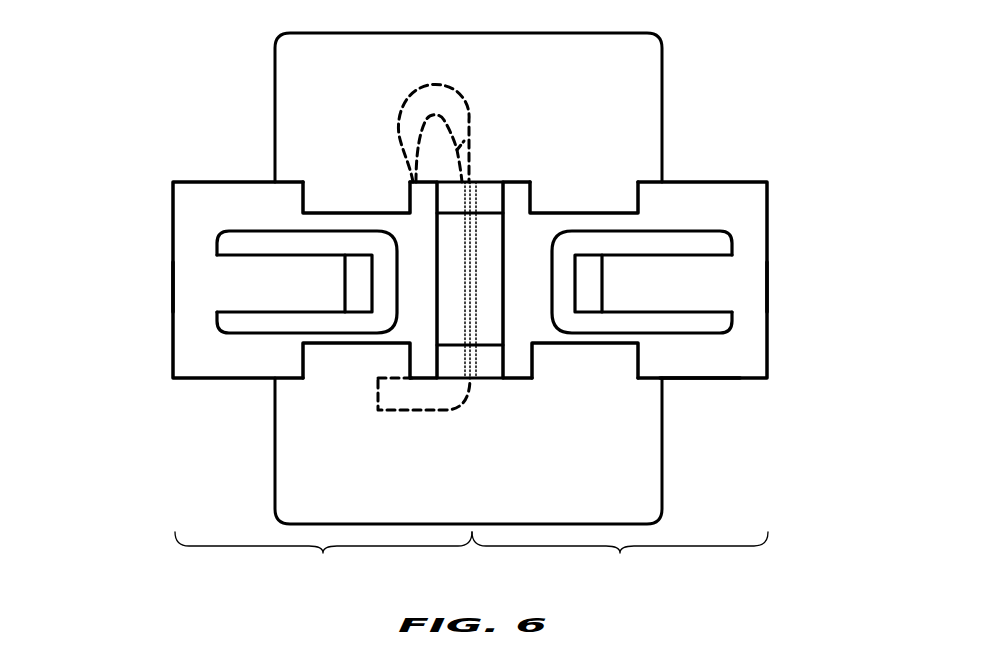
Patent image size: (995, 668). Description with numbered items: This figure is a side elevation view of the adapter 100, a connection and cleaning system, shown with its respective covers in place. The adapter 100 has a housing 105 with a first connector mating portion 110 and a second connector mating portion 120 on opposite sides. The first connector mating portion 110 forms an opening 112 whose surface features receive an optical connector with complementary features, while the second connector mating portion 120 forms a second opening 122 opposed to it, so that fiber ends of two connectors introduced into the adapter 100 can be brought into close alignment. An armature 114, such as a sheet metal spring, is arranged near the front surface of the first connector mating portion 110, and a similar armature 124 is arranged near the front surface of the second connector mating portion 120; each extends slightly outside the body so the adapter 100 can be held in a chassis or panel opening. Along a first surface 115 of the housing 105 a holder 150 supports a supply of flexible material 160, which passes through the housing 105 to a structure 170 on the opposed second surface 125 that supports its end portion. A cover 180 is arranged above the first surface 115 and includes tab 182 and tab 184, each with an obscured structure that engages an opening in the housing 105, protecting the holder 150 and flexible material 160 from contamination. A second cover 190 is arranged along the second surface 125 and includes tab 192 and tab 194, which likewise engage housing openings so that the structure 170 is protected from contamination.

The adapter 100 is at (166, 78).
The housing 105 is at (172, 223).
The first connector mating portion 110 is at (272, 370).
The opening 112 is at (162, 287).
The armature 114 is at (307, 282).
The first surface 115 is at (719, 176).
The second connector mating portion 120 is at (671, 355).
The second opening 122 is at (784, 288).
The armature 124 is at (642, 282).
The second surface 125 is at (706, 388).
The holder 150 is at (415, 170).
The supply of flexible material 160 is at (442, 76).
The structure 170 is at (421, 409).
The cover 180 is at (662, 100).
The tab 182 is at (357, 180).
The tab 184 is at (554, 180).
The cover 190 is at (273, 482).
The tab 192 is at (363, 378).
The tab 194 is at (577, 372).